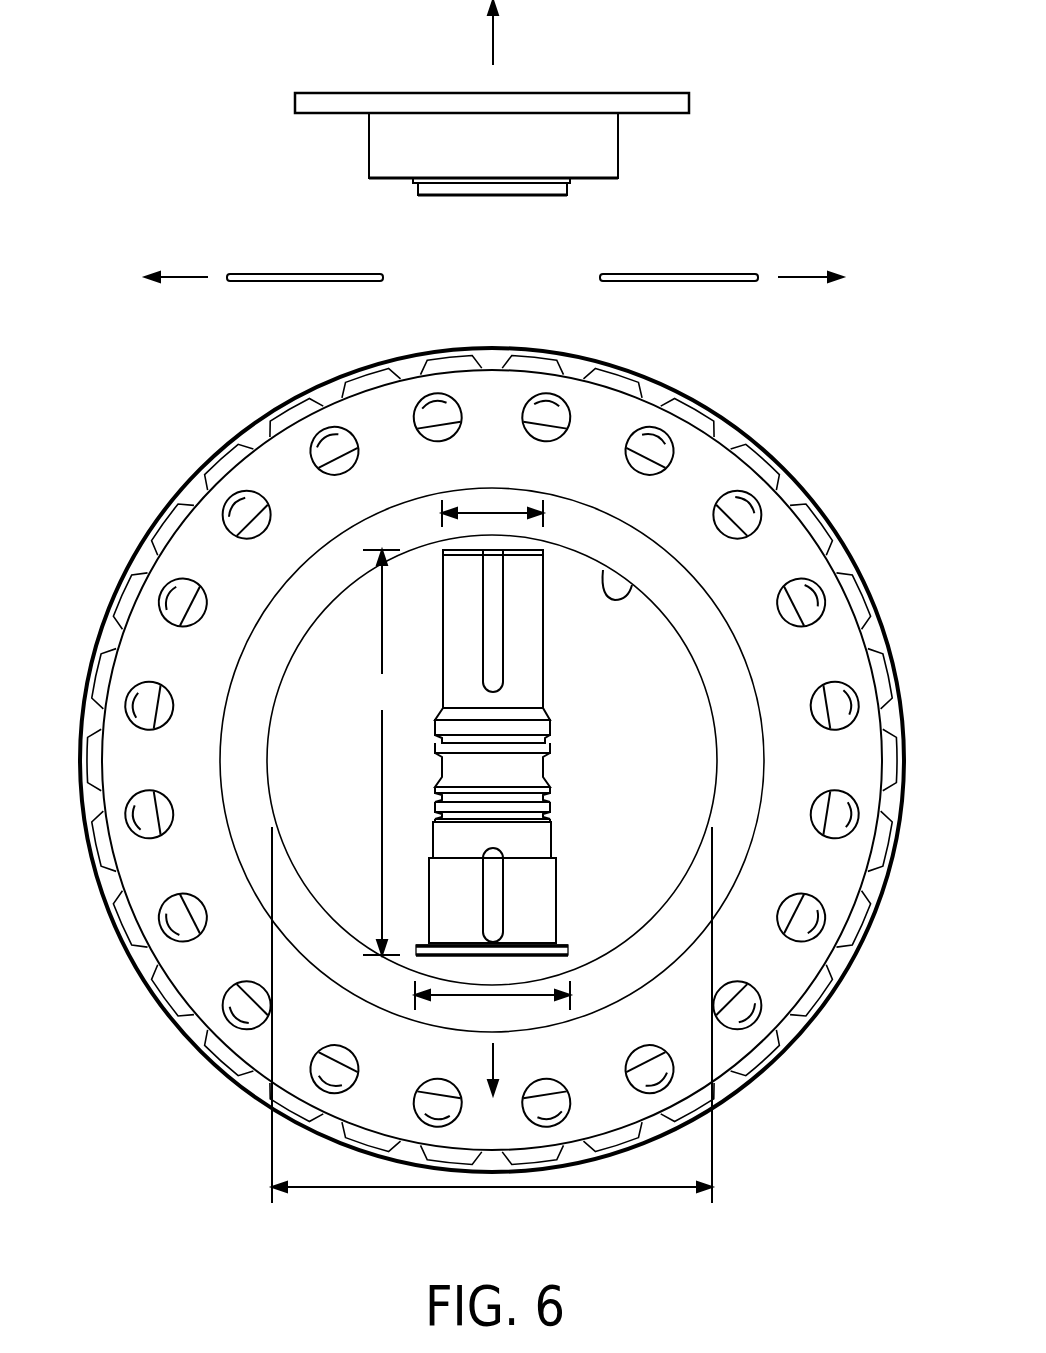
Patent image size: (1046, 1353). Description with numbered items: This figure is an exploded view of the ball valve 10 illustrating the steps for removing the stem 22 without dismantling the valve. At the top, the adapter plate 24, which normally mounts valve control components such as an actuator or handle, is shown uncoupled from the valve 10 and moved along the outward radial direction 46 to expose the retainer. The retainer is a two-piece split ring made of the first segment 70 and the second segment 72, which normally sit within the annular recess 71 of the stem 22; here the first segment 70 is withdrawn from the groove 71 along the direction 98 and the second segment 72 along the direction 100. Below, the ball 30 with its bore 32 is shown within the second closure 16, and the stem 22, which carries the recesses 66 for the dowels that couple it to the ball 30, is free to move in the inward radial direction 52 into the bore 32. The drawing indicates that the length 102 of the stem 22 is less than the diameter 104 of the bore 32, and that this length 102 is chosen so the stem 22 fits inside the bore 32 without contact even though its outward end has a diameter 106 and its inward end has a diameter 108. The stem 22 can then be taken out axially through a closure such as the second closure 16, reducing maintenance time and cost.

The ball valve 10 is at (866, 236).
The second closure 16 is at (780, 537).
The stem 22 is at (543, 640).
The adapter plate 24 is at (543, 98).
The ball 30 is at (724, 676).
The bore 32 is at (630, 590).
The outward radial direction 46 is at (493, 32).
The inward radial direction 52 is at (493, 1060).
The recesses 66 is at (503, 903).
The first c-shaped segment 70 is at (308, 272).
The annular recess 71 is at (435, 790).
The second c-shaped segment 72 is at (678, 272).
The direction 98 is at (180, 282).
The direction 100 is at (803, 282).
The length 102 is at (382, 752).
The diameter 104 is at (398, 1190).
The diameter 106 is at (490, 508).
The diameter 108 is at (515, 995).